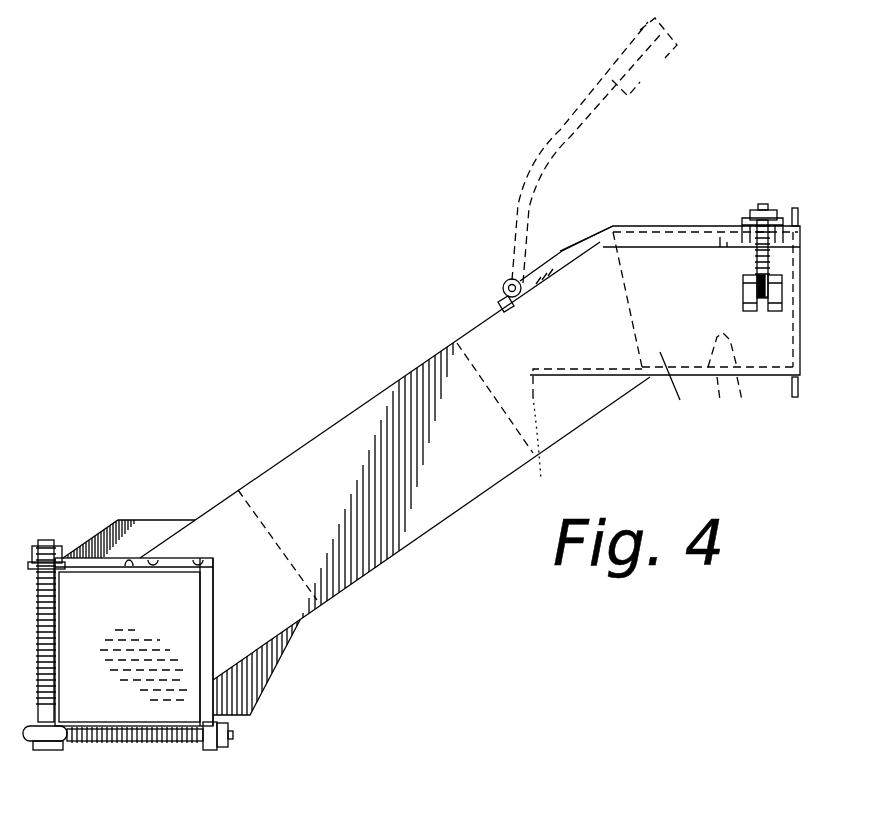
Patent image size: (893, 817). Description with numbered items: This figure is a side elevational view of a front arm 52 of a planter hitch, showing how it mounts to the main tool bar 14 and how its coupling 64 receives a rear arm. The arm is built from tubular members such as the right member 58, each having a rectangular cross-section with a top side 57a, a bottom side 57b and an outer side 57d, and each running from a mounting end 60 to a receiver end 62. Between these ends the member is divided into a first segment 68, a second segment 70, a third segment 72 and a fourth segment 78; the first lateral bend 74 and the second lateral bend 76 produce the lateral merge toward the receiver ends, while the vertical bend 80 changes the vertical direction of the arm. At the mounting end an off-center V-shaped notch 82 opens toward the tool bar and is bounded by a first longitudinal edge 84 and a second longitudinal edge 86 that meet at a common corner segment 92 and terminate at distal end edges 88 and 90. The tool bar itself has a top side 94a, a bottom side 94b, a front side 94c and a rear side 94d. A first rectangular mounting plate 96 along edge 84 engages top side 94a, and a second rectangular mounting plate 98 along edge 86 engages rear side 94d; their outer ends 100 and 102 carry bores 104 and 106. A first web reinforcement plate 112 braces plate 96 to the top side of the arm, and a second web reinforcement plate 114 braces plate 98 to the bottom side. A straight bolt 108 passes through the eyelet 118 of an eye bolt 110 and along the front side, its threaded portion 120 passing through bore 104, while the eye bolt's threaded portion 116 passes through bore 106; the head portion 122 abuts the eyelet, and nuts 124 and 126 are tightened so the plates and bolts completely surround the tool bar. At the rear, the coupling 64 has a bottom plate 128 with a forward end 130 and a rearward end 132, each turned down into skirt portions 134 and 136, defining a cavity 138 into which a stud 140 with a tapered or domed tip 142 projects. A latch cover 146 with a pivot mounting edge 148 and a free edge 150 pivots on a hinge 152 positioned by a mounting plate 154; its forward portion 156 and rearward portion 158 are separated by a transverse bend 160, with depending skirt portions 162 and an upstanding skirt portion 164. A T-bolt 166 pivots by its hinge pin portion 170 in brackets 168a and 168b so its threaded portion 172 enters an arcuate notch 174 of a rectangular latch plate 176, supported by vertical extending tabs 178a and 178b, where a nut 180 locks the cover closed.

The main tool bar 14 is at (96, 692).
The front arm 52 is at (294, 413).
The top side 57a is at (228, 493).
The bottom side 57b is at (413, 555).
The outer side 57d is at (488, 551).
The right member 58 is at (420, 542).
The mounting end 60 is at (196, 528).
The receiver end 62 is at (798, 228).
The coupling 64 is at (719, 220).
The first segment 68 is at (308, 618).
The second segment 70 is at (352, 585).
The third segment 72 is at (560, 431).
The first lateral bend 74 is at (310, 575).
The second lateral bend 76 is at (462, 380).
The fourth segment 78 is at (642, 230).
The vertical bend 80 is at (640, 364).
The V-shaped notch 82 is at (217, 622).
The first longitudinal edge 84 is at (202, 560).
The second longitudinal edge 86 is at (213, 592).
The distal end edge 88 is at (160, 567).
The distal end edge 90 is at (226, 693).
The common corner segment 92 is at (213, 567).
The top side 94a is at (130, 572).
The bottom side 94b is at (105, 726).
The front side 94c is at (59, 592).
The rear side 94d is at (202, 630).
The first rectangular mounting plate 96 is at (91, 558).
The second rectangular mounting plate 98 is at (214, 647).
The outer end 100 is at (25, 598).
The outer end 102 is at (253, 720).
The bore 104 is at (32, 565).
The bore 106 is at (200, 745).
The straight bolt 108 is at (48, 658).
The eye bolt 110 is at (112, 758).
The first web reinforcement plate 112 is at (130, 518).
The second web reinforcement plate 114 is at (255, 675).
The threaded portion 116 is at (234, 732).
The eyelet 118 is at (30, 743).
The threaded portion 120 is at (44, 545).
The head portion 122 is at (48, 750).
The nut 124 is at (52, 545).
The nut 126 is at (228, 750).
The bottom plate 128 is at (645, 378).
The forward end 130 is at (575, 403).
The rearward end 132 is at (782, 382).
The skirt portion 134 is at (540, 450).
The skirt portion 136 is at (798, 398).
The cavity 138 is at (680, 400).
The stud 140 is at (719, 400).
The tapered or domed tip 142 is at (737, 377).
The latch cover 146 is at (563, 147).
The pivot mounting edge 148 is at (517, 247).
The free edge 150 is at (640, 33).
The hinge 152 is at (502, 288).
The mounting plate 154 is at (508, 310).
The forward portion 156 is at (554, 267).
The rearward portion 158 is at (586, 110).
The transverse bend 160 is at (525, 175).
The skirt portions 162 is at (623, 101).
The upstanding skirt portion 164 is at (795, 206).
The T-bolt 166 is at (750, 265).
The bracket 168a is at (743, 302).
The bracket 168b is at (777, 313).
The hinge pin portion 170 is at (757, 313).
The threaded portion 172 is at (757, 254).
The arcuate notch 174 is at (758, 209).
The rectangular latch plate 176 is at (743, 216).
The vertical extending tab 178a is at (719, 234).
The vertical extending tab 178b is at (780, 216).
The nut 180 is at (758, 208).